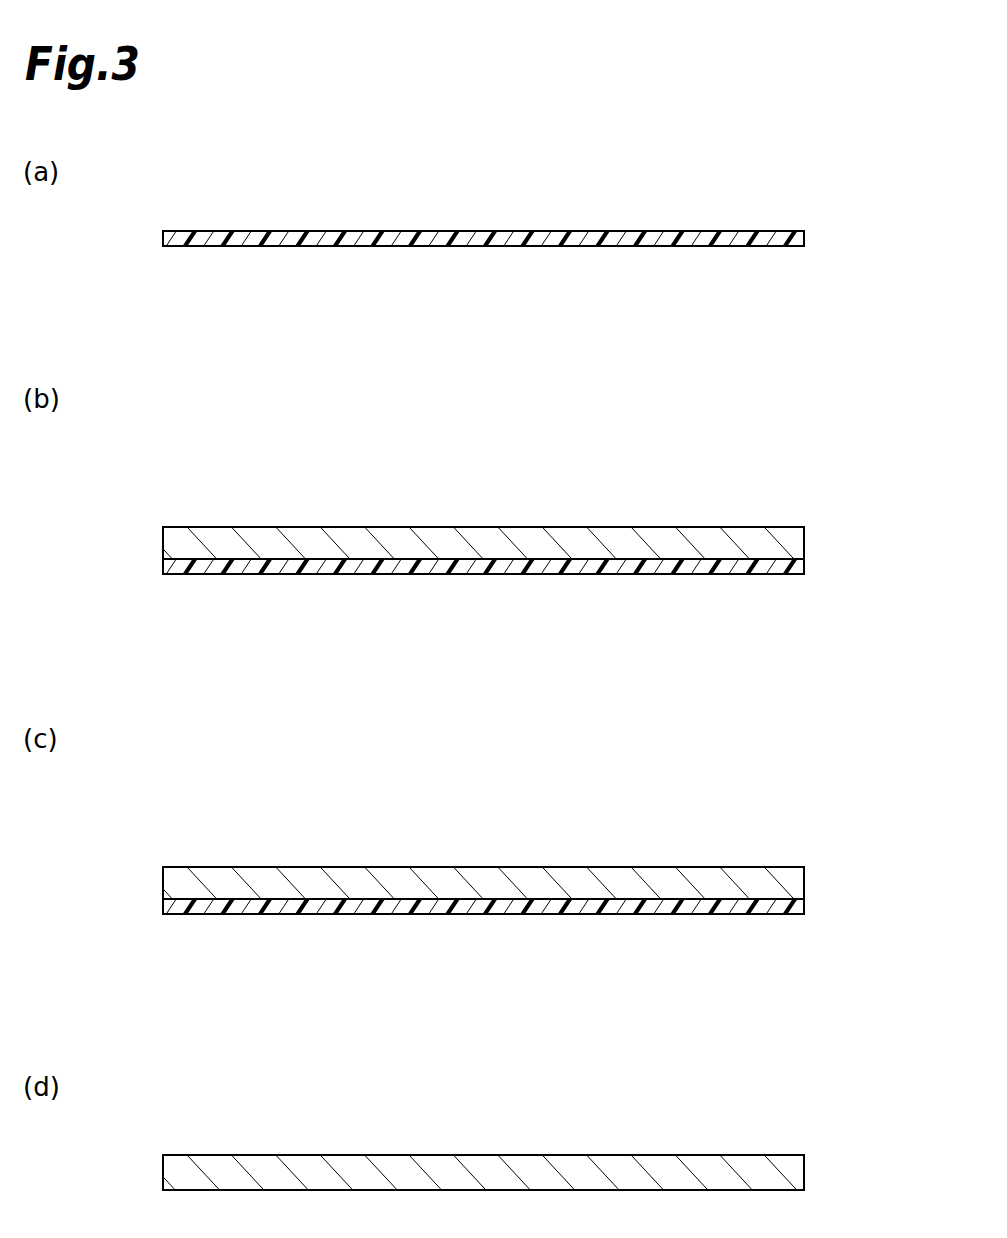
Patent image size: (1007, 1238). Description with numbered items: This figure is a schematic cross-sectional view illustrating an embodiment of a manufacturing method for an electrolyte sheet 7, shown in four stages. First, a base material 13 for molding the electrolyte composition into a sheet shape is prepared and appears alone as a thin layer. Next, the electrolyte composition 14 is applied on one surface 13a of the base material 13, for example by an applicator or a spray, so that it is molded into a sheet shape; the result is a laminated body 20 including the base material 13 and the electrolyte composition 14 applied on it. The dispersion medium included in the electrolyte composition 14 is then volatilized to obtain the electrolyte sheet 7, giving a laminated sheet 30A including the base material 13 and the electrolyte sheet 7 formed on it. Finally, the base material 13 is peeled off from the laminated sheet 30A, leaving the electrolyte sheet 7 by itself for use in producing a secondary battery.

The base material 13 is at (779, 237).
The one surface of the base material 13a is at (509, 556).
The electrolyte composition 14 is at (792, 546).
The laminated body 20 is at (762, 485).
The electrolyte sheet 7 is at (792, 887).
The laminated sheet 30A is at (762, 828).